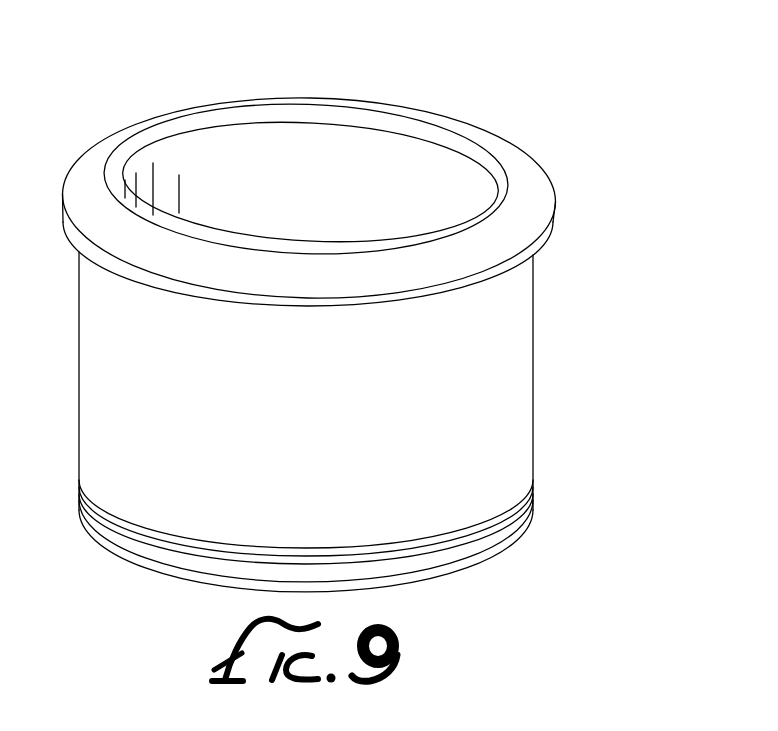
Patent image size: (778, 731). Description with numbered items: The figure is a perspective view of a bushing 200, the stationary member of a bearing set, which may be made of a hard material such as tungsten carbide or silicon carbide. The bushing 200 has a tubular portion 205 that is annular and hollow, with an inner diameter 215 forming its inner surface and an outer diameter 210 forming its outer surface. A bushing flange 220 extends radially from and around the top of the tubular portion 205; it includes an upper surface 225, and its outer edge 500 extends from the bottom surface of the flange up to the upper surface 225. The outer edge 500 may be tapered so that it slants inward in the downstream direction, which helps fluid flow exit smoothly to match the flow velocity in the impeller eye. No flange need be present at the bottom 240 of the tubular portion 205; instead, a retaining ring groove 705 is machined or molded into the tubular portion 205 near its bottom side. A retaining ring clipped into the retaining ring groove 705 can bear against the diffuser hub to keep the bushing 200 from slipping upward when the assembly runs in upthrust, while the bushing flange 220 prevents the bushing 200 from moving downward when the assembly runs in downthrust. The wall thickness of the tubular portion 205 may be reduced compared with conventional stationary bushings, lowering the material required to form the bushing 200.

The bushing 200 is at (493, 63).
The tubular portion 205 is at (500, 368).
The outer diameter 210 is at (323, 408).
The inner diameter 215 is at (332, 196).
The bushing flange 220 is at (115, 140).
The upper surface 225 is at (258, 100).
The bottom 240 is at (148, 565).
The outer edge 500 is at (543, 186).
The retaining ring groove 705 is at (488, 527).